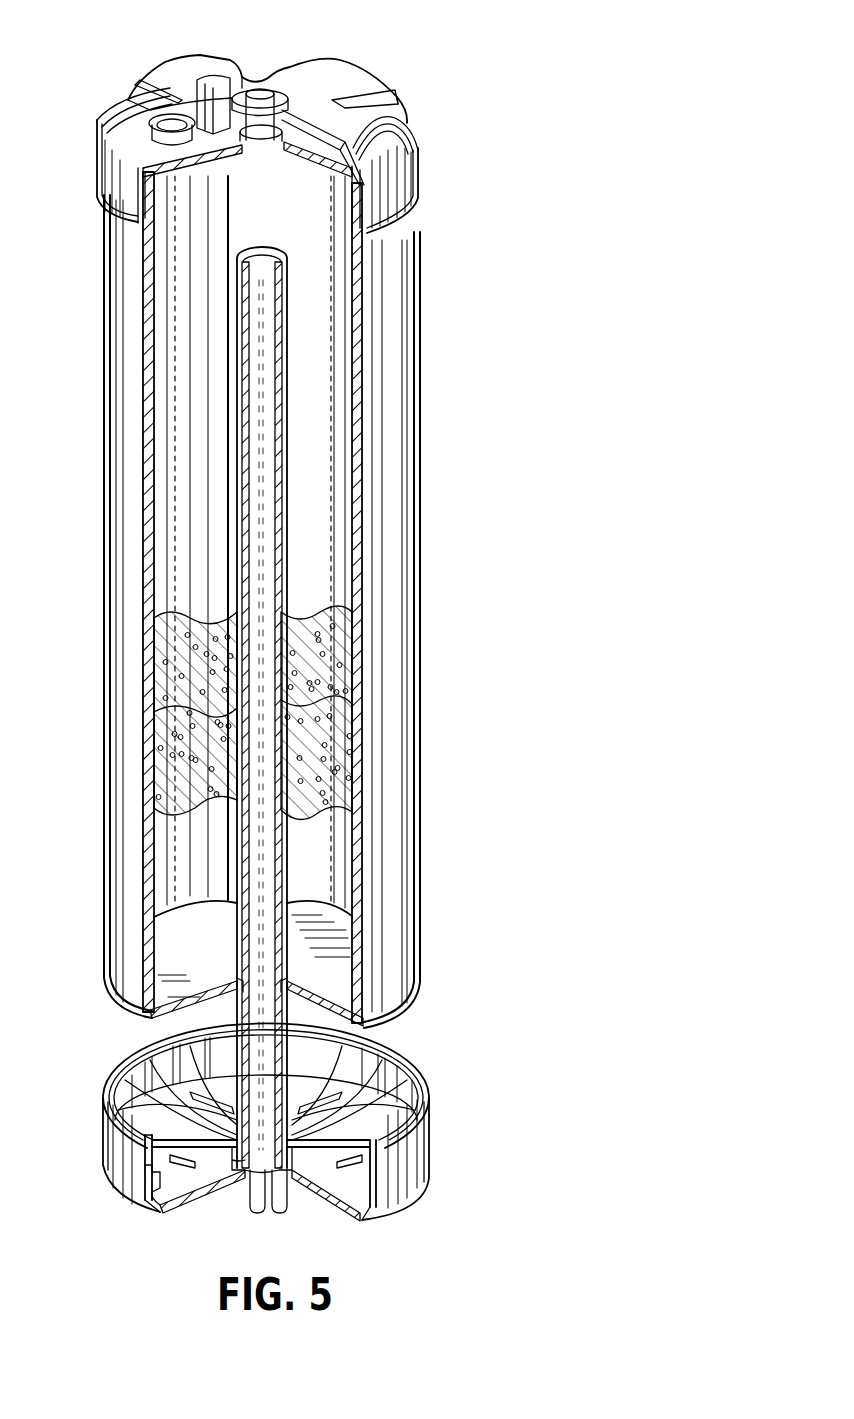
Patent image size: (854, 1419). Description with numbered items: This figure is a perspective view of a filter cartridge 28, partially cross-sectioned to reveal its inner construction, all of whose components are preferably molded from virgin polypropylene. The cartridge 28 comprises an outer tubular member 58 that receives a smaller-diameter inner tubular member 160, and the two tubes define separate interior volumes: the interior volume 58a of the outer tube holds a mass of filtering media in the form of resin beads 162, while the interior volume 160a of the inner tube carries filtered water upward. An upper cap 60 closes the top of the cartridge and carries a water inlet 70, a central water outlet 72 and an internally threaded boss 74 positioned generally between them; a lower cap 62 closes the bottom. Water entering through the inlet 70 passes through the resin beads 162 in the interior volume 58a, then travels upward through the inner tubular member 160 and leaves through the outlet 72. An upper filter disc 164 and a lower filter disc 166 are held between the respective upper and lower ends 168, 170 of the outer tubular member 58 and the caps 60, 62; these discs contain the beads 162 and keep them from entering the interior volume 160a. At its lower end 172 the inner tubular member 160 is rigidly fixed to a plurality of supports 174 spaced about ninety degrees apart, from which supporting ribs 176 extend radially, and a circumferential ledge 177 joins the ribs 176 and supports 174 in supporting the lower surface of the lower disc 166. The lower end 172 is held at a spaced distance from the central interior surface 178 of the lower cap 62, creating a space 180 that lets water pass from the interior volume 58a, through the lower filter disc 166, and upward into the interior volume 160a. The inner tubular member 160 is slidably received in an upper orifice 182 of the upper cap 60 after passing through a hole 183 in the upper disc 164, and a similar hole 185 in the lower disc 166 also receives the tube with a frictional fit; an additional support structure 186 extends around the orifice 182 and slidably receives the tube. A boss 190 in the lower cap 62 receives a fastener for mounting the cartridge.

The cartridge 28 is at (434, 42).
The outer tubular member 58 is at (393, 299).
The interior volume of outer tubular member 58a is at (320, 393).
The upper cap 60 is at (410, 163).
The lower cap 62 is at (428, 1132).
The water inlet 70 is at (170, 157).
The central water outlet 72 is at (260, 90).
The internally threaded boss 74 is at (213, 78).
The inner tubular member 160 is at (283, 438).
The interior volume of inner tubular member 160a is at (265, 500).
The resin beads 162 is at (323, 667).
The upper filter disc 164 is at (113, 123).
The lower filter disc 166 is at (333, 963).
The upper end of outer tubular member 168 is at (362, 186).
The lower end of outer tubular member 170 is at (410, 1005).
The lower end of inner tubular member 172 is at (362, 1222).
The supports 174 is at (160, 1055).
The supporting ribs 176 is at (123, 1085).
The circumferential ledge 177 is at (407, 1061).
The central interior surface of cap 178 is at (163, 1214).
The space 180 is at (240, 1197).
The upper orifice 182 is at (293, 73).
The hole in upper filter disc 183 is at (263, 142).
The hole in lower disc 185 is at (243, 979).
The support structure 186 is at (397, 97).
The boss 190 is at (277, 1217).